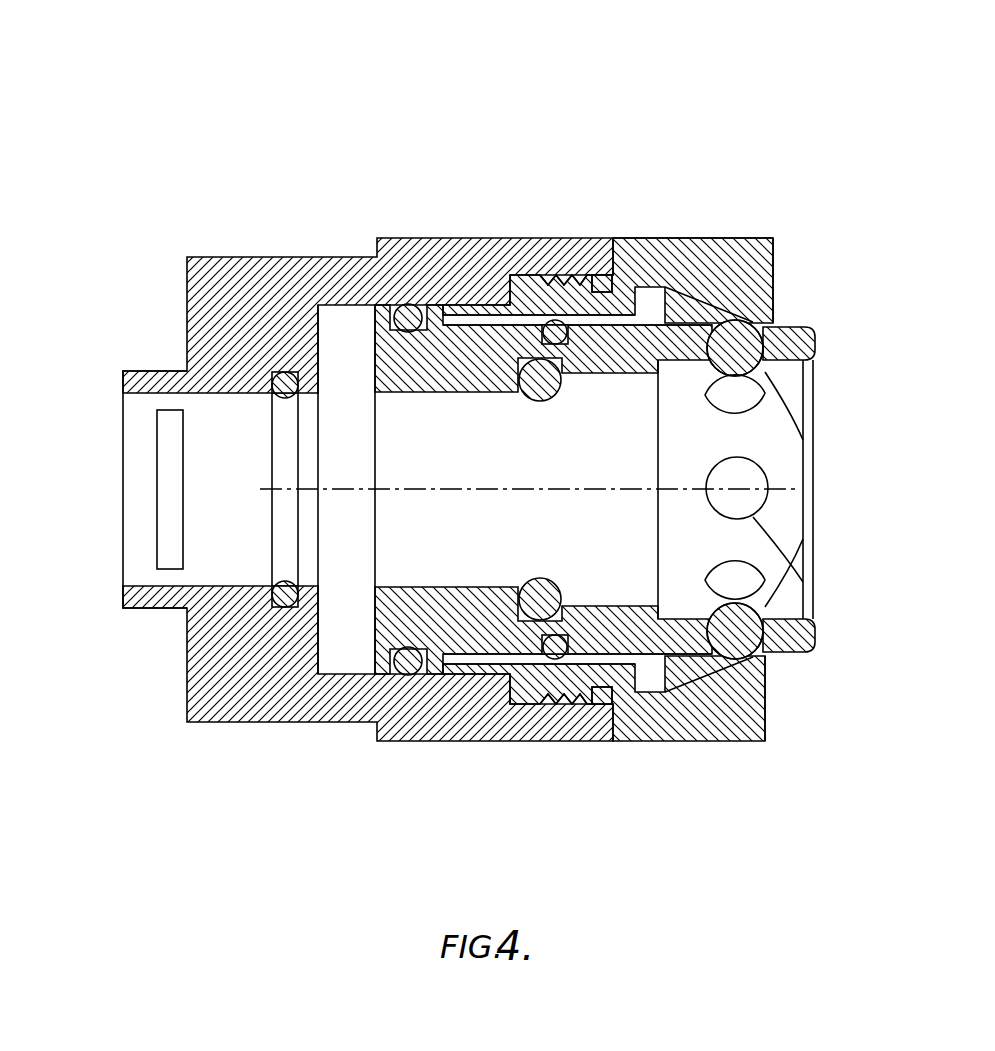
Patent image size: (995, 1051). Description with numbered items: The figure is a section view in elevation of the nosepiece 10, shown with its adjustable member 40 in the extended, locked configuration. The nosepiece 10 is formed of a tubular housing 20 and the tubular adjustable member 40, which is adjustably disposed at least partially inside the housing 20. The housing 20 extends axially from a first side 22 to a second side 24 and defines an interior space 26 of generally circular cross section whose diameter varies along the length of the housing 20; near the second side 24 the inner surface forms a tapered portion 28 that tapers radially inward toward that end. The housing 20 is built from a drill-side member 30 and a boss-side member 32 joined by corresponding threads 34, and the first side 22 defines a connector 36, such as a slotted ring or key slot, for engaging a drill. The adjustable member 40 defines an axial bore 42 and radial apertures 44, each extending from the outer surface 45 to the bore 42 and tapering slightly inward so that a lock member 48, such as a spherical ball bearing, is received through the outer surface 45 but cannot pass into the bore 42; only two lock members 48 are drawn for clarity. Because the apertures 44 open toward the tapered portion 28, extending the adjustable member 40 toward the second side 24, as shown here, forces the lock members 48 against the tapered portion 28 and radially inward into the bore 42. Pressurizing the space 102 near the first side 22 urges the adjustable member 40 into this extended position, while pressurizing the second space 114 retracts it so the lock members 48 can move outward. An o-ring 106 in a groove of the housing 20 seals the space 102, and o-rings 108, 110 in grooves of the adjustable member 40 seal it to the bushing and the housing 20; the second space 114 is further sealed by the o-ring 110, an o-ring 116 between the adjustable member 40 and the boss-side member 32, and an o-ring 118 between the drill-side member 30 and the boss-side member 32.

The nosepiece 10 is at (752, 74).
The tubular housing 20 is at (508, 118).
The first side of the housing 22 is at (187, 322).
The second side of the housing 24 is at (775, 238).
The interior space 26 is at (186, 505).
The tapered portion 28 is at (800, 192).
The drill-side member 30 is at (316, 303).
The boss-side member 32 is at (703, 237).
The threads 34 is at (636, 137).
The connector 36 is at (150, 607).
The adjustable member 40 is at (470, 345).
The axial bore 42 is at (796, 503).
The radial aperture 44 is at (755, 598).
The outer surface of the adjustable member 45 is at (818, 340).
The lock member 48 is at (886, 265).
The space 102 is at (315, 92).
The o-ring 106 is at (233, 798).
The o-ring 108 is at (560, 110).
The o-ring 110 is at (400, 155).
The second space 114 is at (450, 62).
The o-ring 116 is at (556, 318).
The o-ring 118 is at (685, 110).